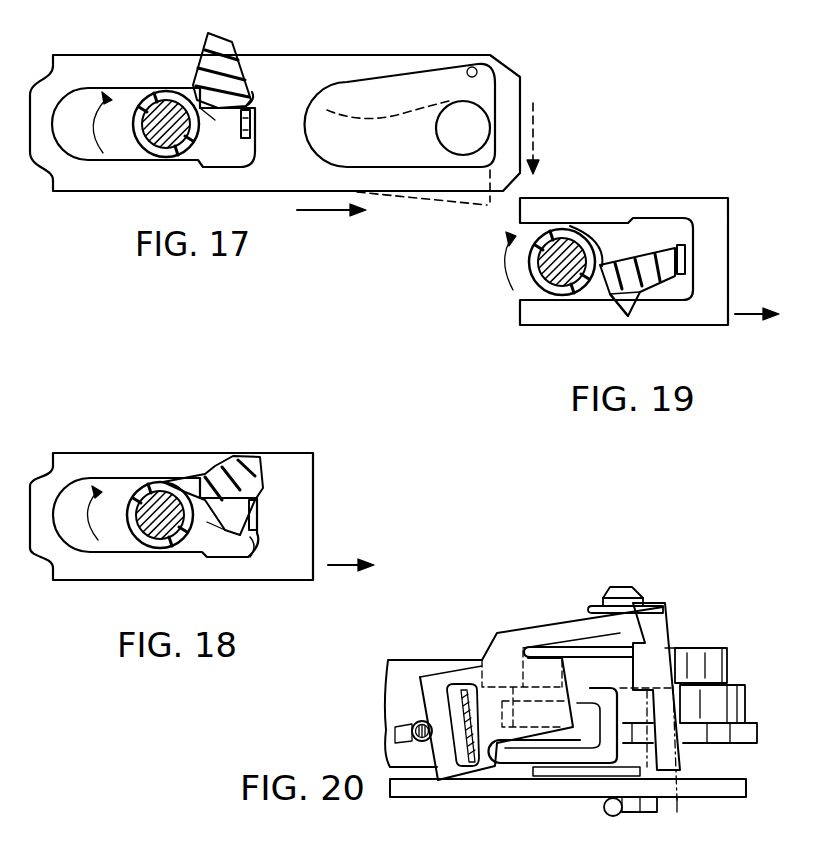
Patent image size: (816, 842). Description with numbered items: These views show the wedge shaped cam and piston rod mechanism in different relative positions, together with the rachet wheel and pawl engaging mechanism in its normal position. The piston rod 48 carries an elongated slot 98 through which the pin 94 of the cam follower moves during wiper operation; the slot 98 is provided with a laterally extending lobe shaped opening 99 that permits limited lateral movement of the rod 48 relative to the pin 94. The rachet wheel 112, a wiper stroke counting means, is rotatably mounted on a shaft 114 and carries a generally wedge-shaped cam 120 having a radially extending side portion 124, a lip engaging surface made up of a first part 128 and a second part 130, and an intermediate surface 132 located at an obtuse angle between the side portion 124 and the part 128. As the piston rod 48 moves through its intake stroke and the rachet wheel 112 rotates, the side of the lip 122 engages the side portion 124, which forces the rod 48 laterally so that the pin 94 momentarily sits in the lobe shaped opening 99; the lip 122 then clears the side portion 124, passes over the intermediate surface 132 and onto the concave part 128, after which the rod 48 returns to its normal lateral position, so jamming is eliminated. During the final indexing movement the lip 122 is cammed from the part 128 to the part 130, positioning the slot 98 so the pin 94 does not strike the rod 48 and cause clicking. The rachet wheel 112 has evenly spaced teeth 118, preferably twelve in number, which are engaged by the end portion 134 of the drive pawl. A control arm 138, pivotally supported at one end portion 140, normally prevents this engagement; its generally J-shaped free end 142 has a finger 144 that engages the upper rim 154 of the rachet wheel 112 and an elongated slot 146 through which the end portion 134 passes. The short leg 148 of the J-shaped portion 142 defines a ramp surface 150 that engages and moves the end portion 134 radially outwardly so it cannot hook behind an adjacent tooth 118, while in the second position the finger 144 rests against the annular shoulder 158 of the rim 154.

In FIG. 17, the piston rod 48 is at (357, 60).
In FIG. 19, the piston rod 48 is at (705, 208).
In FIG. 18, the piston rod 48 is at (303, 477).
In FIG. 17, the pin 94 is at (478, 117).
In FIG. 17, the elongated slot 98 is at (319, 150).
In FIG. 17, the lobe shaped opening 99 is at (487, 58).
In FIG. 20, the rachet wheel 112 is at (723, 644).
In FIG. 17, the shaft 114 is at (172, 142).
In FIG. 19, the shaft 114 is at (568, 292).
In FIG. 18, the shaft 114 is at (147, 480).
In FIG. 20, the shaft 114 is at (603, 808).
In FIG. 20, the teeth 118 is at (747, 735).
In FIG. 17, the cam 120 is at (200, 64).
In FIG. 19, the cam 120 is at (646, 252).
In FIG. 18, the cam 120 is at (220, 470).
In FIG. 17, the lip 122 is at (251, 127).
In FIG. 19, the lip 122 is at (690, 264).
In FIG. 18, the lip 122 is at (260, 507).
In FIG. 17, the side portion 124 is at (218, 120).
In FIG. 19, the side portion 124 is at (620, 300).
In FIG. 18, the side portion 124 is at (212, 535).
In FIG. 17, the first part of lip engaging surface 128 is at (240, 65).
In FIG. 19, the first part of lip engaging surface 128 is at (667, 282).
In FIG. 18, the first part of lip engaging surface 128 is at (260, 478).
In FIG. 17, the second part of lip engaging surface 130 is at (232, 38).
In FIG. 19, the second part of lip engaging surface 130 is at (688, 257).
In FIG. 18, the second part of lip engaging surface 130 is at (257, 457).
In FIG. 17, the intermediate surface 132 is at (256, 97).
In FIG. 19, the intermediate surface 132 is at (630, 319).
In FIG. 18, the intermediate surface 132 is at (250, 556).
In FIG. 20, the end portion of pawl 134 is at (728, 657).
In FIG. 20, the control arm 138 is at (522, 630).
In FIG. 20, the end portion 140 is at (452, 688).
In FIG. 20, the J-shaped free end 142 is at (667, 620).
In FIG. 20, the finger 144 is at (628, 594).
In FIG. 20, the elongated slot 146 is at (643, 672).
In FIG. 20, the short leg 148 is at (623, 762).
In FIG. 20, the ramp surface 150 is at (678, 798).
In FIG. 20, the upper rim 154 is at (600, 622).
In FIG. 20, the shoulder 158 is at (667, 710).